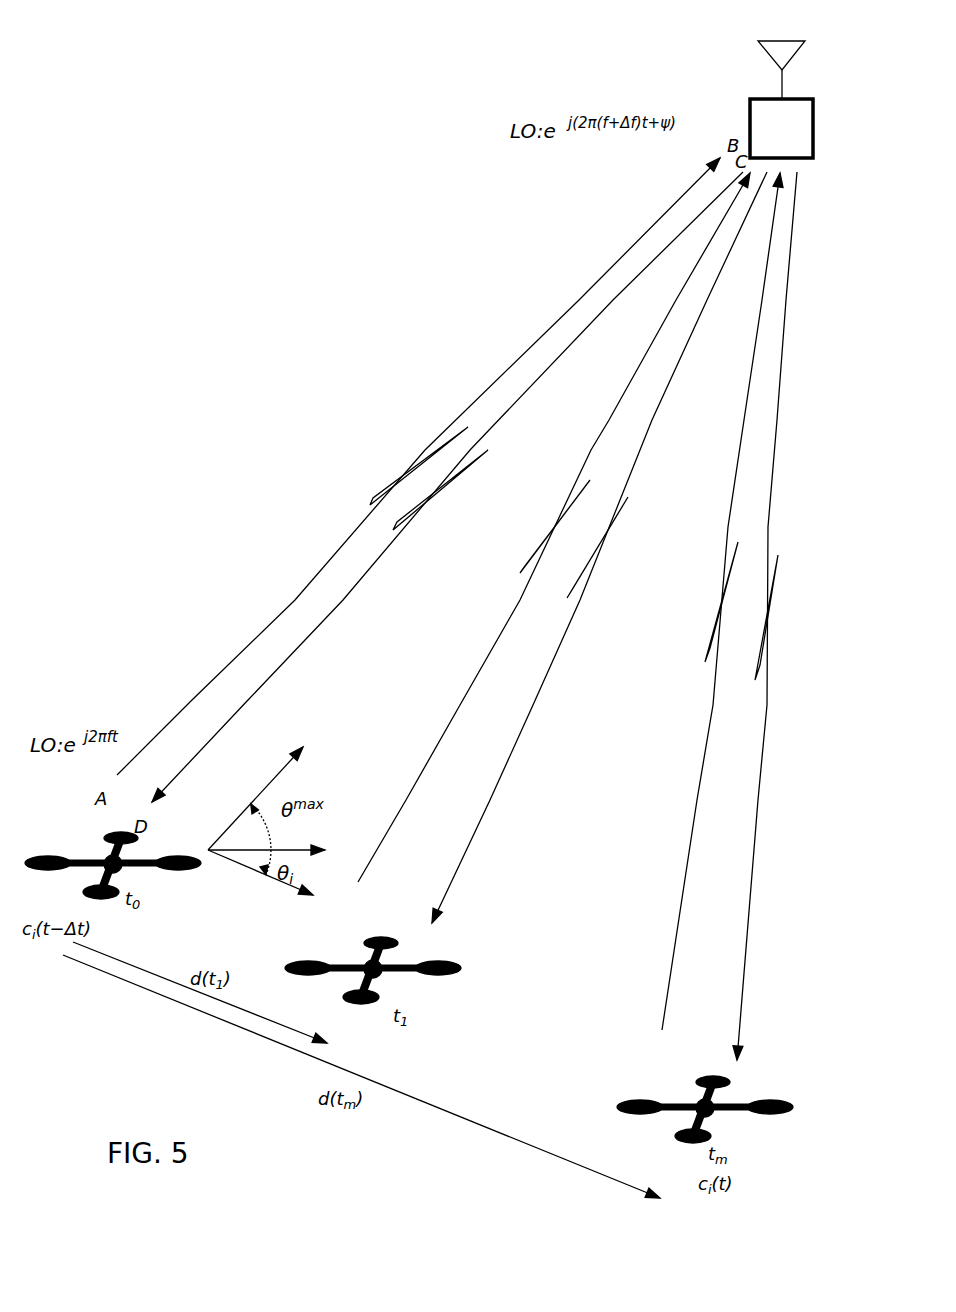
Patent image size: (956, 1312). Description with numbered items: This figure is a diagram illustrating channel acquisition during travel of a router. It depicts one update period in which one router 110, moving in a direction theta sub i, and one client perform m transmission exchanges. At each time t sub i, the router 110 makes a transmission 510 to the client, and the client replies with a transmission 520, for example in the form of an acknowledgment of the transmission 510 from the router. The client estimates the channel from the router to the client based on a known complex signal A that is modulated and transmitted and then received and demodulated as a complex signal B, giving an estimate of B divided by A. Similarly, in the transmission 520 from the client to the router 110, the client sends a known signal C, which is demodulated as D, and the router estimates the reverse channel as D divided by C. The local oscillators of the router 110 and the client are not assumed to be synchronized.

The router 110 is at (757, 100).
The transmission 510 is at (455, 420).
The transmission 520 is at (470, 460).